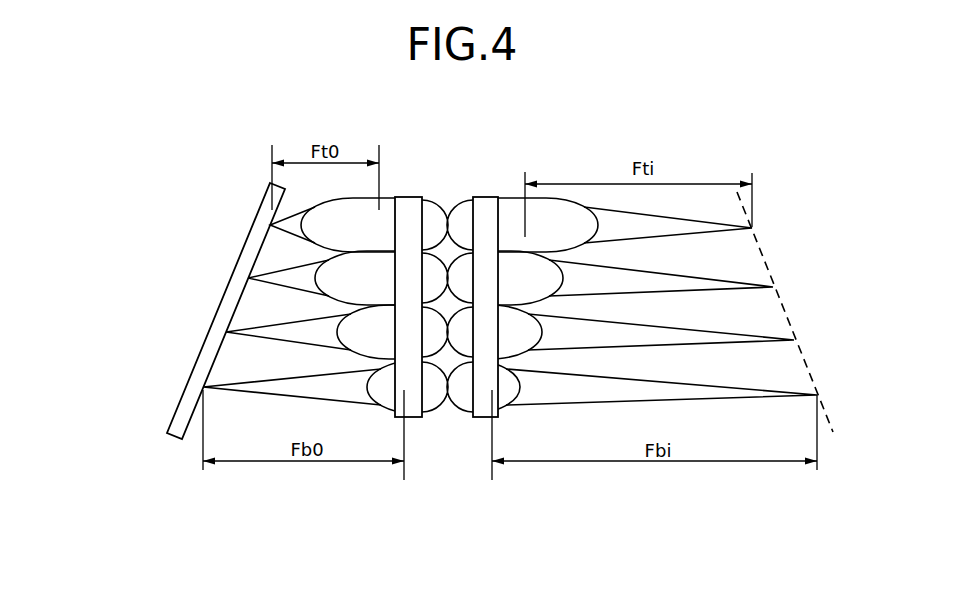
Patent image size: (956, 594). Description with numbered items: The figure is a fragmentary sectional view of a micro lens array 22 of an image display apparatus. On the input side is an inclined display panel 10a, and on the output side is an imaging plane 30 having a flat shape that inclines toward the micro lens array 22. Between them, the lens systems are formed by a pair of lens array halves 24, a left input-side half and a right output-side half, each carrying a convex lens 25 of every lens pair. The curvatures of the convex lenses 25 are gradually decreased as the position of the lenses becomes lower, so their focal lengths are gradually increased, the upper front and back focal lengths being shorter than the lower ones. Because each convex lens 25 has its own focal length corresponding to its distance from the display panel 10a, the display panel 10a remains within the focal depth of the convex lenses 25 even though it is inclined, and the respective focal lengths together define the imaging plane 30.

The display panel 10a is at (215, 313).
The micro lens array 22 is at (449, 343).
The lens array half 24 is at (415, 428).
The convex lens 25 is at (385, 212).
The imaging plane 30 is at (768, 270).